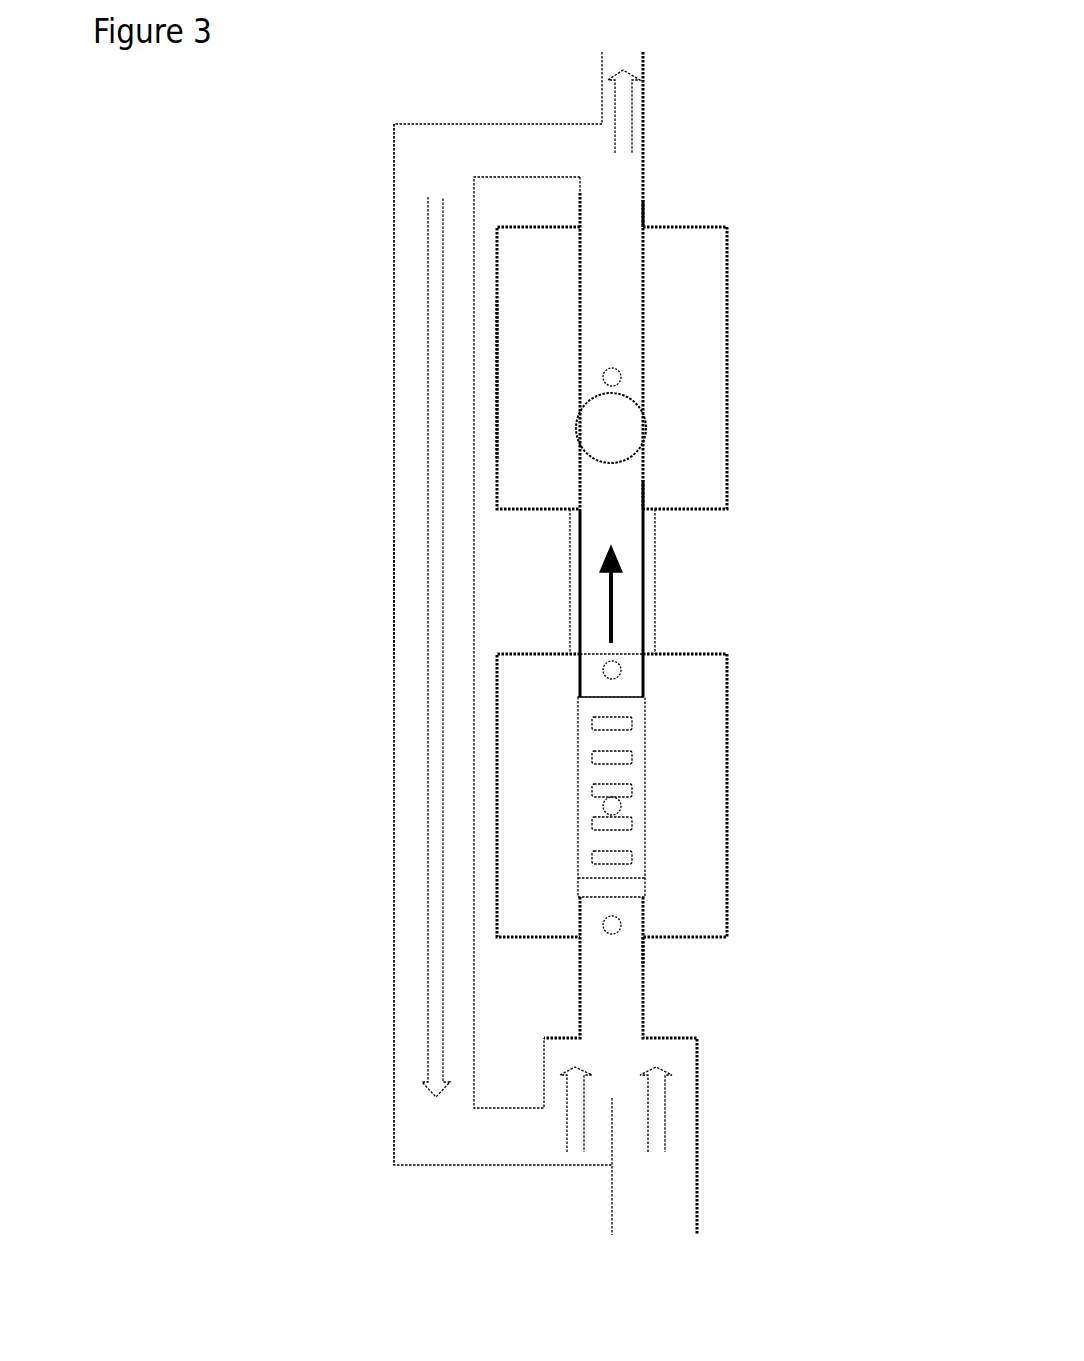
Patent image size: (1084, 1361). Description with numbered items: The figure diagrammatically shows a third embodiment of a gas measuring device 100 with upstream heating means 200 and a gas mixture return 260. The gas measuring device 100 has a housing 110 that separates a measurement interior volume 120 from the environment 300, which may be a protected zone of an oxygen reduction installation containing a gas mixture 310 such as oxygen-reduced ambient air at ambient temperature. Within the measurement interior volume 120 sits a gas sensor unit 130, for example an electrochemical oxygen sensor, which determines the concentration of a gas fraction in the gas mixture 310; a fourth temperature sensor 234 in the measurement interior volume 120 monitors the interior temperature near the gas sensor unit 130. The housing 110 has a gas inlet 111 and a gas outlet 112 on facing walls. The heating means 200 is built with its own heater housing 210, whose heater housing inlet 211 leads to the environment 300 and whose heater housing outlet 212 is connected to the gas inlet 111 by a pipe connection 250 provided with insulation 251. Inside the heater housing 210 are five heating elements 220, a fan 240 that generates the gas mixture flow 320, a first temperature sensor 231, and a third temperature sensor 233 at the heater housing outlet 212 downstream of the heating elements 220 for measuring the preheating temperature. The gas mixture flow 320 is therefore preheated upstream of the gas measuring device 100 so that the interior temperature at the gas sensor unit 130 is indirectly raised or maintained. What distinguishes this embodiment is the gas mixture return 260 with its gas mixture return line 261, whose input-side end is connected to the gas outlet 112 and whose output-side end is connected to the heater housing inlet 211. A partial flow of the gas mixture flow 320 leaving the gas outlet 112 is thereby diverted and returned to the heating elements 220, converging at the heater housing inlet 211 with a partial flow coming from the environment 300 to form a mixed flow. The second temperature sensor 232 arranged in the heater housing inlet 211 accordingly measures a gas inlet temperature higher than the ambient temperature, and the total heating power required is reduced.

The gas measuring device 100 is at (545, 301).
The housing 110 is at (727, 307).
The gas inlet 111 is at (643, 491).
The gas outlet 112 is at (643, 211).
The measurement interior volume 120 is at (583, 334).
The gas sensor unit 130 is at (611, 428).
The heating means 200 is at (552, 781).
The heater housing 210 is at (727, 729).
The heater housing inlet 211 is at (643, 953).
The heater housing outlet 212 is at (642, 685).
The heating elements 220 is at (630, 855).
The first temperature sensor 231 is at (603, 805).
The second temperature sensor 232 is at (603, 924).
The third temperature sensor 233 is at (603, 670).
The fourth temperature sensor 234 is at (603, 377).
The fan 240 is at (578, 884).
The pipe connection 250 is at (643, 595).
The insulation 251 is at (655, 635).
The gas mixture return 260 is at (367, 525).
The gas mixture return line 261 is at (394, 597).
The environment 300 is at (348, 254).
The gas mixture 310 is at (429, 642).
The gas mixture flow 320 is at (554, 625).